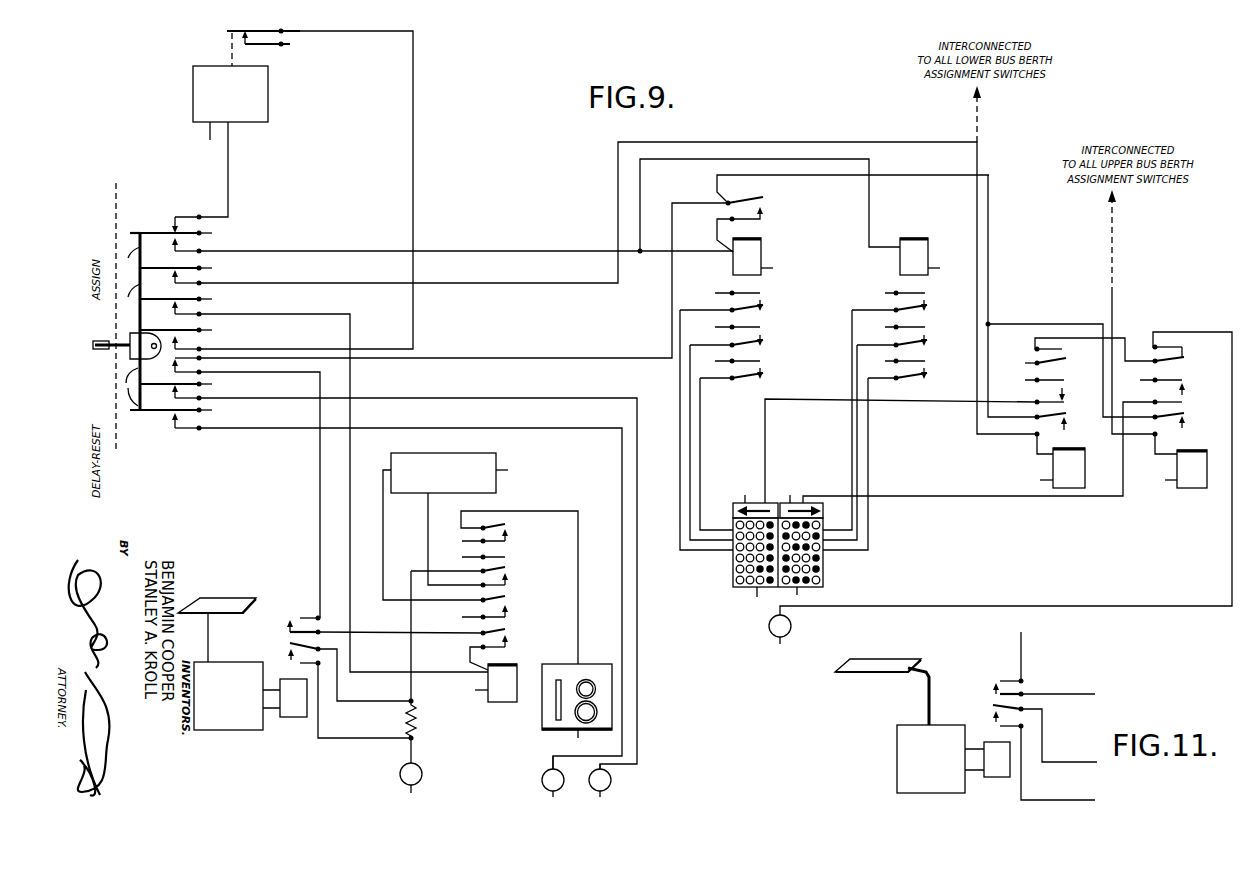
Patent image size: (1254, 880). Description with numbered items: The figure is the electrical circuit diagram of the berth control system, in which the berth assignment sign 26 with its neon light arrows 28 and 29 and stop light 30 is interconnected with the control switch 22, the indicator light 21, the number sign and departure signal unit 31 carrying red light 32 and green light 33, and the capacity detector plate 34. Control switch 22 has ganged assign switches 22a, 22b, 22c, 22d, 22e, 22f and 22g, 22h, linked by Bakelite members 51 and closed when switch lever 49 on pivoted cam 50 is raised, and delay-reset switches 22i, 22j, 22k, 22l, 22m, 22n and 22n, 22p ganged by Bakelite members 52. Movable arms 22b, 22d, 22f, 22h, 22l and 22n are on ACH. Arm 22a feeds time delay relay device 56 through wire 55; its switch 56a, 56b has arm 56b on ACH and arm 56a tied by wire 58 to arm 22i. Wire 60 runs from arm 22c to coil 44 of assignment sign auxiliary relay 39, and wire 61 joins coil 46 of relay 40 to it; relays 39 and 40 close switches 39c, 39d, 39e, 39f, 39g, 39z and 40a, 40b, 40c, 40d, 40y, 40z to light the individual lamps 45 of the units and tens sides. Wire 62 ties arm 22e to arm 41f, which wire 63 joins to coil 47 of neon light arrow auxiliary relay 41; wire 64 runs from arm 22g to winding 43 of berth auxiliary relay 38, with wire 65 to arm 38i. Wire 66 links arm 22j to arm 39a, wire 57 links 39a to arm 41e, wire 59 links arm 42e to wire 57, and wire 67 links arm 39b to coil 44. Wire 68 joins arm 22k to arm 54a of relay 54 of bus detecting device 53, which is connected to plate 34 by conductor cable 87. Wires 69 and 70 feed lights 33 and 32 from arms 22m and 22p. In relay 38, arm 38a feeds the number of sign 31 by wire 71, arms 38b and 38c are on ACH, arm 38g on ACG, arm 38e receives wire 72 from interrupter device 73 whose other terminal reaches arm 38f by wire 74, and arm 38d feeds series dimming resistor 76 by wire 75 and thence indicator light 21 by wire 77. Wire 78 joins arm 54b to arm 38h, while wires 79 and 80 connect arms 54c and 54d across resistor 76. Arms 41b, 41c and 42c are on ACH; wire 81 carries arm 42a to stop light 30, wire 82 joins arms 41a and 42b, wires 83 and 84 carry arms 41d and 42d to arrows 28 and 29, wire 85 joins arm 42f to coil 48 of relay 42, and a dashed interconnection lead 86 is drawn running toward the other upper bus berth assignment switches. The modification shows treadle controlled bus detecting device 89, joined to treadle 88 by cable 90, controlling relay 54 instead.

In FIG. 9, the indicator light 21 is at (422, 774).
In FIG. 9, the control switch 22 is at (117, 178).
In FIG. 9, the switch contact arm 22a is at (180, 207).
In FIG. 9, the movable switch arm 22b is at (150, 224).
In FIG. 9, the fixed contact arm 22c is at (189, 238).
In FIG. 9, the movable switch arm 22d is at (172, 251).
In FIG. 9, the fixed contact arm 22e is at (189, 272).
In FIG. 9, the movable switch arm 22f is at (172, 283).
In FIG. 9, the fixed contact arm 22g is at (189, 305).
In FIG. 9, the movable switch arm 22h is at (189, 326).
In FIG. 9, the fixed contact arm 22i is at (183, 348).
In FIG. 9, the movable contact arm 22j is at (178, 367).
In FIG. 9, the fixed contact arm 22k is at (189, 382).
In FIG. 9, the movable switch arm 22l is at (180, 393).
In FIG. 9, the fixed contact arm 22m is at (184, 407).
In FIG. 9, the movable switch arm 22n is at (154, 420).
In FIG. 9, the fixed contact arm 22p is at (173, 429).
In FIG. 9, the berth assignment sign 26 is at (788, 462).
In FIG. 9, the left neon light arrow 28 is at (735, 508).
In FIG. 9, the right neon light arrow 29 is at (825, 511).
In FIG. 9, the stop light 30 is at (768, 630).
In FIG. 9, the number sign and departure signal unit 31 is at (538, 738).
In FIG. 9, the red light 32 is at (542, 781).
In FIG. 9, the green light 33 is at (611, 781).
In FIG. 9, the capacity detector plate 34 is at (250, 596).
In FIG. 9, the berth auxiliary relay 38 is at (484, 620).
In FIG. 9, the movable switch arm 38a is at (508, 527).
In FIG. 9, the fixed contact arm 38b is at (484, 538).
In FIG. 9, the fixed contact arm 38c is at (484, 556).
In FIG. 9, the movable contact arm 38d is at (508, 571).
In FIG. 9, the fixed contact arm 38e is at (508, 582).
In FIG. 9, the movable switch arm 38f is at (507, 599).
In FIG. 9, the fixed contact arm 38g is at (484, 614).
In FIG. 9, the movable switch arm 38h is at (508, 631).
In FIG. 9, the fixed contact arm 38i is at (506, 644).
In FIG. 9, the assignment sign auxiliary relay 39 is at (742, 280).
In FIG. 9, the movable contact arm 39a is at (770, 193).
In FIG. 9, the fixed contact arm 39b is at (765, 209).
In FIG. 9, the switch contact 39c is at (742, 291).
In FIG. 9, the switch contact 39d is at (765, 304).
In FIG. 9, the switch contact 39e is at (742, 323).
In FIG. 9, the switch contact 39f is at (764, 338).
In FIG. 9, the switch contact 39g is at (742, 357).
In FIG. 9, the switch contact 39z is at (764, 374).
In FIG. 9, the assignment sign auxiliary relay 40 is at (912, 300).
In FIG. 9, the switch contact 40a is at (909, 290).
In FIG. 9, the switch contact 40b is at (928, 304).
In FIG. 9, the switch contact 40c is at (908, 323).
In FIG. 9, the switch contact 40d is at (928, 338).
In FIG. 9, the switch contact 40y is at (909, 357).
In FIG. 9, the switch contact 40z is at (928, 374).
In FIG. 9, the neon light arrow auxiliary relay 41 is at (1071, 335).
In FIG. 9, the fixed contact arm 41a is at (1095, 349).
In FIG. 9, the movable contact arm 41b is at (1046, 362).
In FIG. 9, the movable contact arm 41c is at (1046, 377).
In FIG. 9, the fixed contact arm 41d is at (1078, 391).
In FIG. 9, the movable contact arm 41e is at (1067, 402).
In FIG. 9, the fixed contact arm 41f is at (1068, 419).
In FIG. 9, the neon light arrow auxiliary relay 42 is at (1164, 425).
In FIG. 9, the fixed contact arm 42a is at (1186, 345).
In FIG. 9, the movable contact arm 42b is at (1186, 355).
In FIG. 9, the movable contact arm 42c is at (1164, 375).
In FIG. 9, the fixed contact arm 42d is at (1198, 387).
In FIG. 9, the movable contact arm 42e is at (1186, 402).
In FIG. 9, the fixed contact arm 42f is at (1185, 419).
In FIG. 9, the winding 43 is at (514, 690).
In FIG. 9, the energizing coil 44 is at (762, 256).
In FIG. 9, the individual lamps 45 is at (733, 566).
In FIG. 9, the energizing coil 46 is at (900, 262).
In FIG. 9, the energizing coil 47 is at (1085, 470).
In FIG. 9, the energizing coil 48 is at (1203, 479).
In FIG. 9, the switch lever 49 is at (100, 342).
In FIG. 9, the pivoted cam 50 is at (130, 352).
In FIG. 9, the Bakelite members 51 is at (129, 269).
In FIG. 9, the Bakelite members 52 is at (128, 387).
In FIG. 9, the bus detecting device 53 is at (222, 731).
In FIG. 9, the relay 54 is at (289, 665).
In FIG. 11, the relay 54 is at (993, 733).
In FIG. 9, the fixed contact arm 54a is at (300, 617).
In FIG. 11, the fixed contact arm 54a is at (1000, 680).
In FIG. 9, the movable contact arm 54b is at (288, 624).
In FIG. 11, the movable contact arm 54b is at (991, 686).
In FIG. 9, the movable contact arm 54c is at (289, 643).
In FIG. 11, the movable contact arm 54c is at (994, 705).
In FIG. 9, the fixed contact arm 54d is at (288, 657).
In FIG. 11, the fixed contact arm 54d is at (991, 717).
In FIG. 9, the wire 55 is at (230, 180).
In FIG. 9, the time delay relay device 56 is at (271, 102).
In FIG. 9, the movable contact arm 56a is at (242, 26).
In FIG. 9, the fixed contact arm 56b is at (260, 46).
In FIG. 9, the wire 57 is at (953, 178).
In FIG. 9, the wire 58 is at (413, 162).
In FIG. 9, the wire 59 is at (1046, 323).
In FIG. 9, the wire 60 is at (458, 246).
In FIG. 9, the wire 61 is at (866, 163).
In FIG. 9, the wire 62 is at (455, 277).
In FIG. 9, the wire 63 is at (1036, 450).
In FIG. 9, the wire 64 is at (352, 338).
In FIG. 9, the wire 65 is at (468, 654).
In FIG. 9, the wire 66 is at (477, 356).
In FIG. 9, the wire 67 is at (714, 225).
In FIG. 9, the wire 68 is at (318, 466).
In FIG. 11, the wire 68 is at (1023, 659).
In FIG. 9, the wire 69 is at (512, 393).
In FIG. 9, the wire 70 is at (480, 423).
In FIG. 9, the wire 71 is at (575, 503).
In FIG. 9, the wire 72 is at (427, 519).
In FIG. 9, the interrupter device 73 is at (436, 452).
In FIG. 9, the wire 74 is at (382, 524).
In FIG. 9, the wire 75 is at (410, 617).
In FIG. 9, the series dimming resistor 76 is at (418, 725).
In FIG. 9, the wire 77 is at (409, 755).
In FIG. 9, the wire 78 is at (378, 640).
In FIG. 11, the wire 78 is at (1073, 683).
In FIG. 9, the wire 79 is at (380, 693).
In FIG. 11, the wire 79 is at (1067, 755).
In FIG. 9, the wire 80 is at (360, 731).
In FIG. 11, the wire 80 is at (1062, 799).
In FIG. 9, the wire 81 is at (1168, 605).
In FIG. 9, the wire 82 is at (1117, 338).
In FIG. 9, the wire 83 is at (898, 399).
In FIG. 9, the wire 84 is at (942, 483).
In FIG. 9, the wire 85 is at (1155, 451).
In FIG. 9, the conductor 86 is at (1114, 310).
In FIG. 9, the conductor cable 87 is at (210, 646).
In FIG. 11, the treadle 88 is at (916, 648).
In FIG. 11, the treadle controlled bus detecting device 89 is at (897, 779).
In FIG. 11, the cable 90 is at (925, 690).